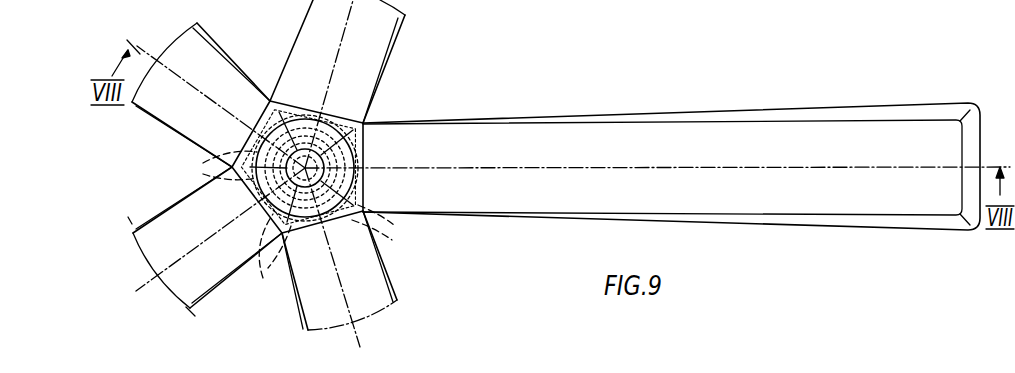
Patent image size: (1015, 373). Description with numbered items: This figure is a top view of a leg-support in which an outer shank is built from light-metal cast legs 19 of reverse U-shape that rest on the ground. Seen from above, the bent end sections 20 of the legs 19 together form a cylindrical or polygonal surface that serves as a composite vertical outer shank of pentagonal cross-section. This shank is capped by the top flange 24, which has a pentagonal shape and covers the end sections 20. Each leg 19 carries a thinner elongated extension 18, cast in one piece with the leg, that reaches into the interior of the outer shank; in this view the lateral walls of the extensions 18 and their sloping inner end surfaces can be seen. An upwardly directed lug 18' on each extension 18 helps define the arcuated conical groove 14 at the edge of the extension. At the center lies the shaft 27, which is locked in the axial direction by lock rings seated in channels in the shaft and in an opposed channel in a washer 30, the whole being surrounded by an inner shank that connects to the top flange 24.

The arcuated conical groove 14 is at (343, 118).
The extension 18 is at (217, 166).
The upwardly directed lug 18' is at (388, 229).
The leg 19 is at (663, 138).
The bent end section 20 is at (270, 257).
The top flange 24 is at (357, 143).
The shaft 27 is at (272, 120).
The washer 30 is at (302, 124).